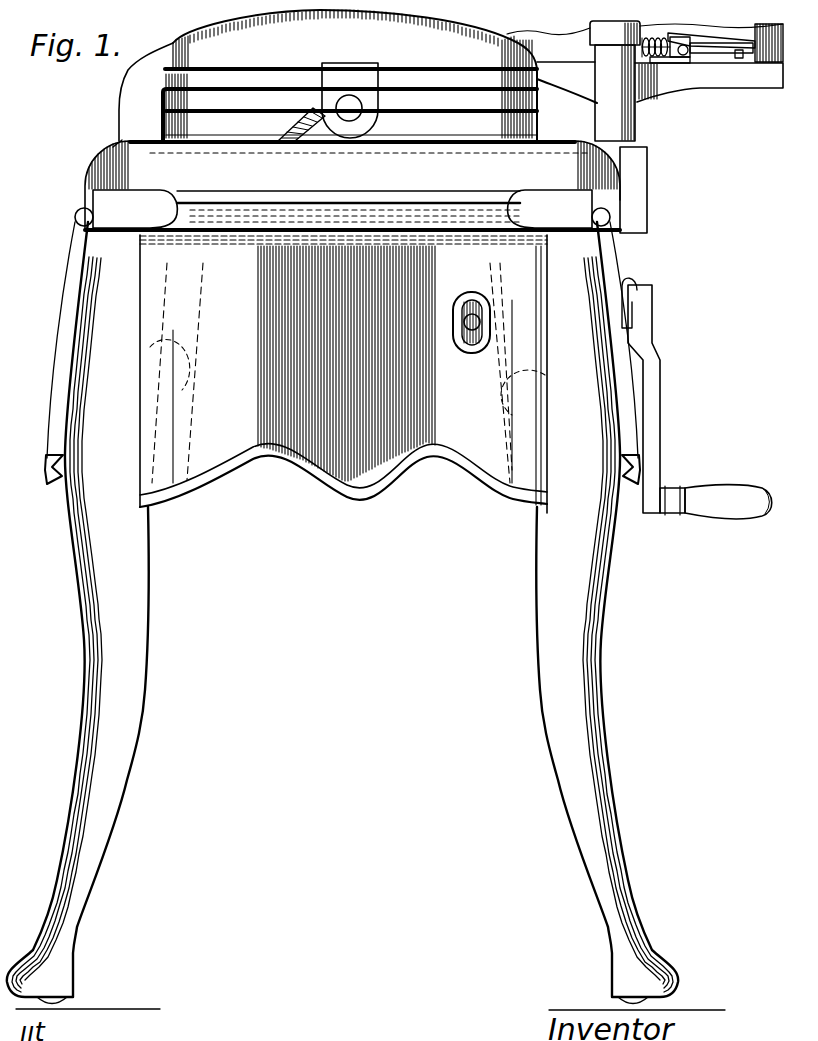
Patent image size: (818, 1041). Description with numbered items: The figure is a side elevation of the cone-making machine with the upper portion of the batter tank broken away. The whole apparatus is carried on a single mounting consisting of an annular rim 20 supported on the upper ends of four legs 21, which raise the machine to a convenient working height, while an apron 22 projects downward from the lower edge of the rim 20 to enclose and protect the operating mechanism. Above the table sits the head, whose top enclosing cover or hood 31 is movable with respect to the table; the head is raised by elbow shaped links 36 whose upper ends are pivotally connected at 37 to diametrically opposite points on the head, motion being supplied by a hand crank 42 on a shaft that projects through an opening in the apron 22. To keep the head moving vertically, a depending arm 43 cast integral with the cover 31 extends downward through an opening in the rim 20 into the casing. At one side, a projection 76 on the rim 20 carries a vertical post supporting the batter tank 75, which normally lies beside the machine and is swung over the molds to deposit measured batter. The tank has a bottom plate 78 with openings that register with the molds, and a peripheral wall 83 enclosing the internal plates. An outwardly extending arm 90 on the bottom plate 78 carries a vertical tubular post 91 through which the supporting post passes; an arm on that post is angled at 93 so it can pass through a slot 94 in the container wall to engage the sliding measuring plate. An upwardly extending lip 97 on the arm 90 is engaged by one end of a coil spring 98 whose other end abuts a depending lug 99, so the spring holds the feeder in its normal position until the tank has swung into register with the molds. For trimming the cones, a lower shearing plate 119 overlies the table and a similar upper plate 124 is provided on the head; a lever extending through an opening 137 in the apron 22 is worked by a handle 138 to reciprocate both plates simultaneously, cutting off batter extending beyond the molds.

The annular rim 20 is at (347, 185).
The legs 21 is at (146, 693).
The apron 22 is at (278, 444).
The cover 31 is at (478, 42).
The elbow shaped link 36 is at (313, 108).
The pivotal connection 37 is at (350, 96).
The hand crank 42 is at (732, 497).
The depending arm 43 is at (152, 60).
The tank 75 is at (560, 25).
The projection 76 is at (647, 196).
The bottom plate 78 is at (711, 78).
The peripheral wall 83 is at (567, 36).
The outwardly extending arm 90 is at (577, 86).
The vertical tubular post 91 is at (622, 123).
The angle of arm 93 is at (720, 41).
The slot 94 is at (760, 58).
The upwardly extending lip 97 is at (645, 40).
The coil spring 98 is at (678, 37).
The depending lug 99 is at (692, 40).
The lower plate 119 is at (420, 131).
The upper plate 124 is at (399, 100).
The opening 137 is at (473, 349).
The handle 138 is at (462, 335).